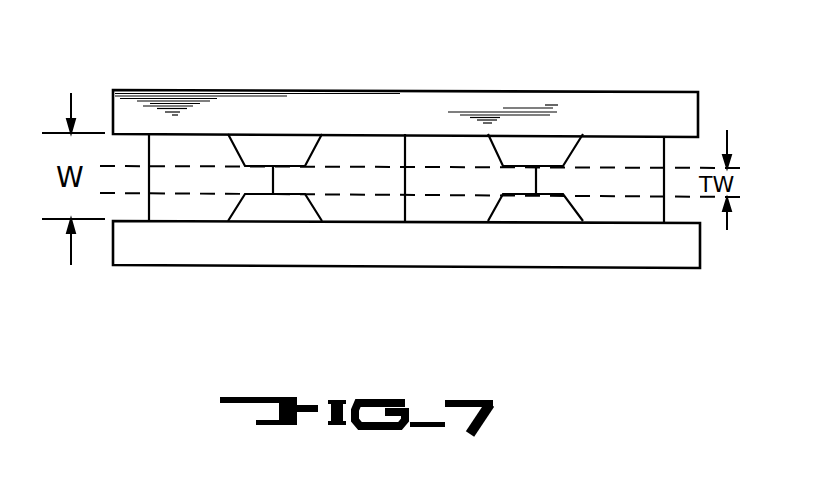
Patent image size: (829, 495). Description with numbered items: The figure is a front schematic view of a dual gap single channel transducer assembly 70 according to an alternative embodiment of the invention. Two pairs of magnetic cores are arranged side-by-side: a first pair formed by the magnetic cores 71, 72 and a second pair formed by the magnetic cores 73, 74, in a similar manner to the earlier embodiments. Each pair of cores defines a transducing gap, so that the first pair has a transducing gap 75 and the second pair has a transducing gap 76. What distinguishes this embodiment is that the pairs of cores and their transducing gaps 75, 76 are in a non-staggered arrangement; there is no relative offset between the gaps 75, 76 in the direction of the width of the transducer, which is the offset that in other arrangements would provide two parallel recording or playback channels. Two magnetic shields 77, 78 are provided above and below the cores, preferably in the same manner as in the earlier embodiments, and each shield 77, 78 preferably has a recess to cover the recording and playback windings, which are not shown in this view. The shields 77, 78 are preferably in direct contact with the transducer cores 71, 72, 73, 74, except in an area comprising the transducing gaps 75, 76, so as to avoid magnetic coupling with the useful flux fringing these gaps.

The dual gap single channel transducer assembly 70 is at (258, 56).
The magnetic core 71 is at (189, 194).
The magnetic core 72 is at (299, 197).
The magnetic core 73 is at (475, 212).
The magnetic core 74 is at (541, 198).
The transducing gap 75 is at (275, 181).
The transducing gap 76 is at (535, 180).
The magnetic shield 77 is at (605, 101).
The magnetic shield 78 is at (642, 257).